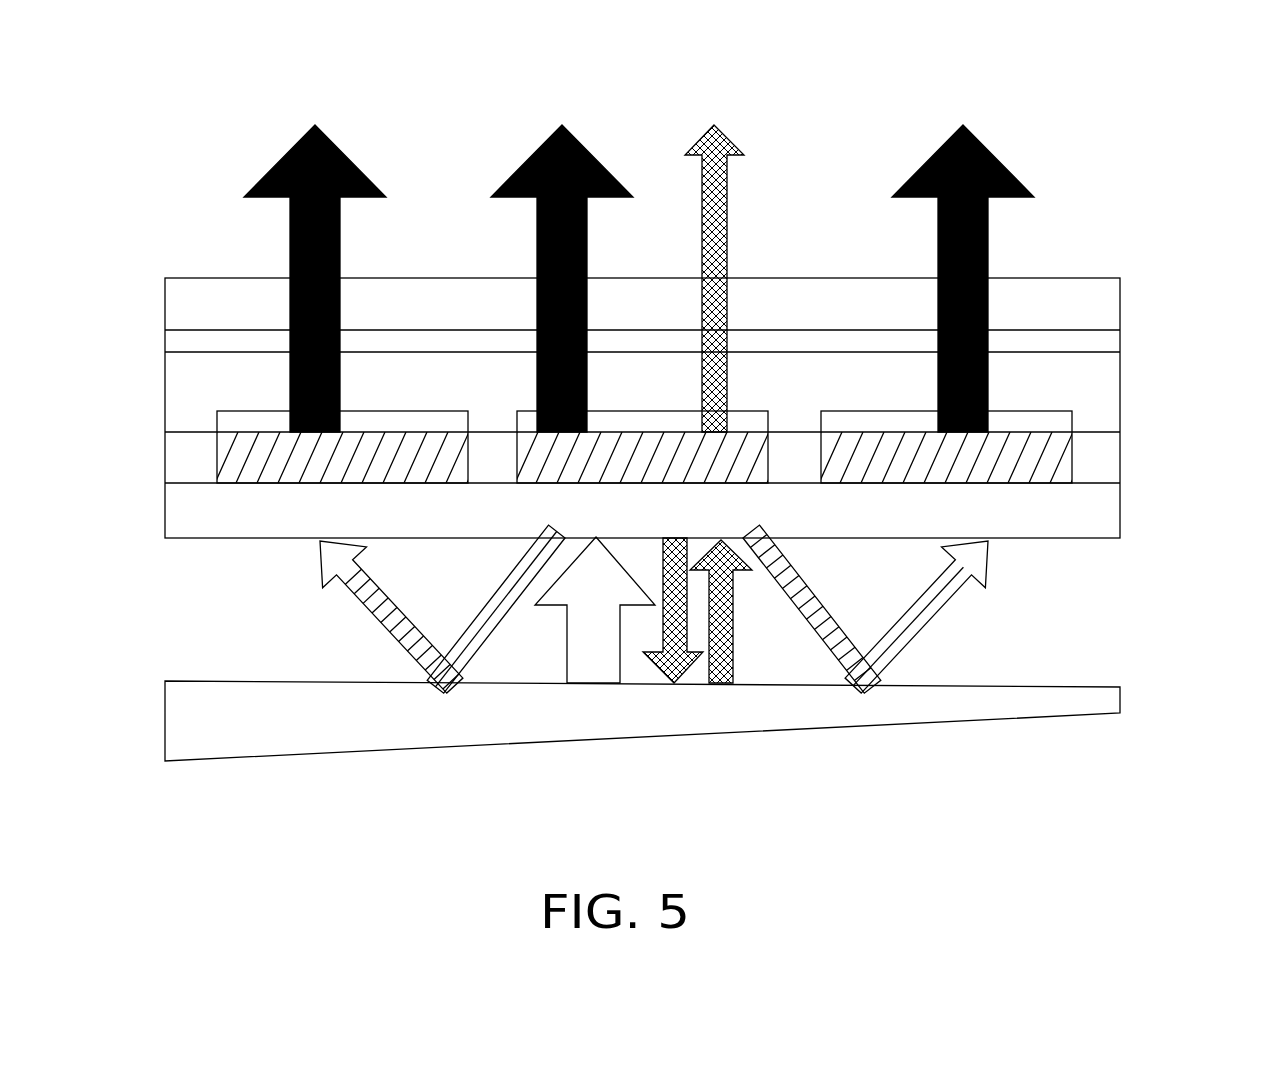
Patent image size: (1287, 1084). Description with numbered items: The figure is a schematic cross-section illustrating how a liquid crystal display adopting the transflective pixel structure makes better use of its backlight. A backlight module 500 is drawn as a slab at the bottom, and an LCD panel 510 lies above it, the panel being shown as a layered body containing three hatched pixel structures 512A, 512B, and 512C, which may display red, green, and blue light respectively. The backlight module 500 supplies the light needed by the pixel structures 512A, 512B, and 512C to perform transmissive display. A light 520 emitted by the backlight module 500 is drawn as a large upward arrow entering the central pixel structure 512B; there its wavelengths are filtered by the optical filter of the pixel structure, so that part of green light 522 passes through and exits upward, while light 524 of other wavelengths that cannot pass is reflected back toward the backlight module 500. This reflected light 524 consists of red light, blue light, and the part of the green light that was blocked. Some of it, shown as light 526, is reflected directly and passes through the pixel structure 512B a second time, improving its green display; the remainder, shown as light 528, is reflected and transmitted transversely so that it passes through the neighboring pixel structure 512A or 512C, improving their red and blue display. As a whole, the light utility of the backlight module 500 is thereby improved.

The backlight module 500 is at (1073, 705).
The LCD panel 510 is at (1201, 607).
The pixel structure 512A is at (235, 458).
The pixel structure 512B is at (757, 465).
The pixel structure 512C is at (1043, 467).
The light 520 is at (598, 662).
The green light 522 is at (602, 168).
The reflected light 524 is at (480, 627).
The light 526 is at (737, 653).
The light 528 is at (410, 637).